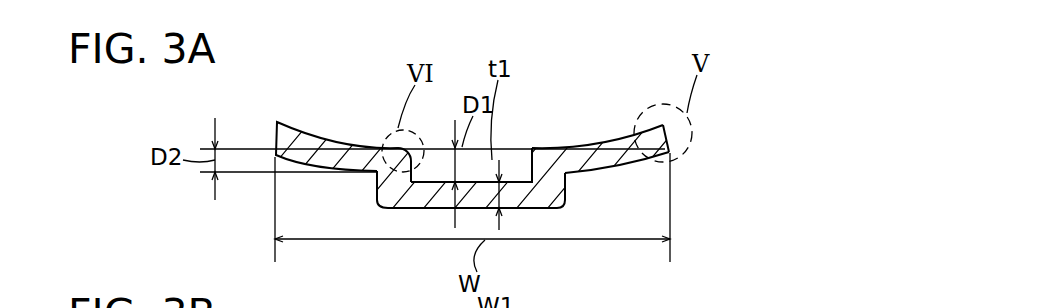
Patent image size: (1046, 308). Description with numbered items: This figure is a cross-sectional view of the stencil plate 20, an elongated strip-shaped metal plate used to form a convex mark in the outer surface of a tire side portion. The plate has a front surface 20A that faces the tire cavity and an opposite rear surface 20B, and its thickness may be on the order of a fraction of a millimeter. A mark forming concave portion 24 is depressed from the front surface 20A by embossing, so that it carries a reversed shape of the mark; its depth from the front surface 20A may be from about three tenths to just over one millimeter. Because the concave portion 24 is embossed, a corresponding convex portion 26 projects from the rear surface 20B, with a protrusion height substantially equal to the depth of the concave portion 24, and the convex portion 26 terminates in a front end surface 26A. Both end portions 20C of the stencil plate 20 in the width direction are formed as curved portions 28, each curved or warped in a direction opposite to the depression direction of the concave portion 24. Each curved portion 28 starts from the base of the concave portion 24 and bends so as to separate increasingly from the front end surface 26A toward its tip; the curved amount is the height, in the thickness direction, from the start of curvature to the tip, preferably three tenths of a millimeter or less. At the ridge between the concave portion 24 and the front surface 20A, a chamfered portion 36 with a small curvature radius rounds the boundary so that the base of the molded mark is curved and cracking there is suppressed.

The stencil plate 20 is at (479, 155).
The front surface 20A is at (566, 145).
The rear surface 20B is at (585, 175).
The end portion 20C is at (328, 138).
The mark forming concave portion 24 is at (433, 163).
The convex portion 26 is at (537, 209).
The front end surface 26A is at (418, 210).
The curved portion 28 is at (475, 111).
The chamfered portion 36 is at (533, 148).